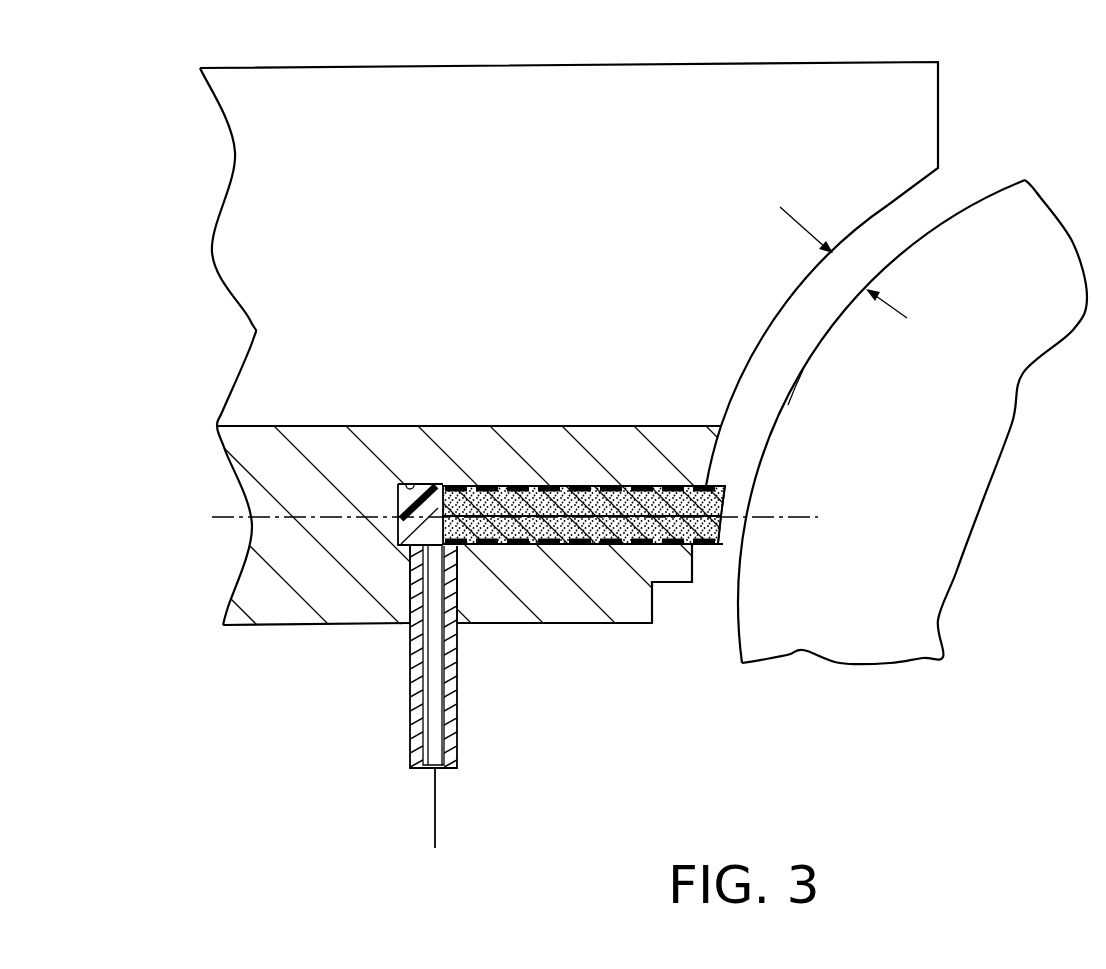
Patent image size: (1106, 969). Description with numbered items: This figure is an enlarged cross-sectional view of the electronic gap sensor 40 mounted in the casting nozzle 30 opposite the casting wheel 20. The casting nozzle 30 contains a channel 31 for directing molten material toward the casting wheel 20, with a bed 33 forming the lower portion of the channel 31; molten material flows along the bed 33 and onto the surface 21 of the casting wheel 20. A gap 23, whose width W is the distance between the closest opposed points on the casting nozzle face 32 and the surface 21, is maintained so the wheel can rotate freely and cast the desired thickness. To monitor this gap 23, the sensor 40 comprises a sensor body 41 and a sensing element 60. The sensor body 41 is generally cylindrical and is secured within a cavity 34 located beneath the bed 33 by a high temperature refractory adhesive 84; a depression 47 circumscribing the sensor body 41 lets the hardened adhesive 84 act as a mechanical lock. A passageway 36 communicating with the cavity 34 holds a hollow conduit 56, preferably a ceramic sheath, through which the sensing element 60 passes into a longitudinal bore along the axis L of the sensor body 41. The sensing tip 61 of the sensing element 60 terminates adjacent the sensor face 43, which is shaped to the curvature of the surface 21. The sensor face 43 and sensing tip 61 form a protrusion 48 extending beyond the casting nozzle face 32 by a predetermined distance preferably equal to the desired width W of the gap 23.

The casting wheel 20 is at (912, 422).
The surface 21 is at (815, 355).
The gap 23 is at (785, 375).
The casting nozzle 30 is at (569, 226).
The channel 31 is at (533, 199).
The casting nozzle face 32 is at (886, 200).
The bed 33 is at (505, 425).
The cavity 34 is at (418, 483).
The passageway 36 is at (411, 627).
The electronic gap sensor 40 is at (600, 559).
The sensor body 41 is at (625, 490).
The sensor face 43 is at (721, 540).
The depression 47 is at (487, 488).
The protrusion 48 is at (707, 482).
The conduit 56 is at (453, 686).
The sensing element 60 is at (437, 807).
The sensing tip 61 is at (722, 515).
The high temperature refractory adhesive 84 is at (562, 545).
The width of gap W is at (900, 315).
The axis L is at (238, 517).